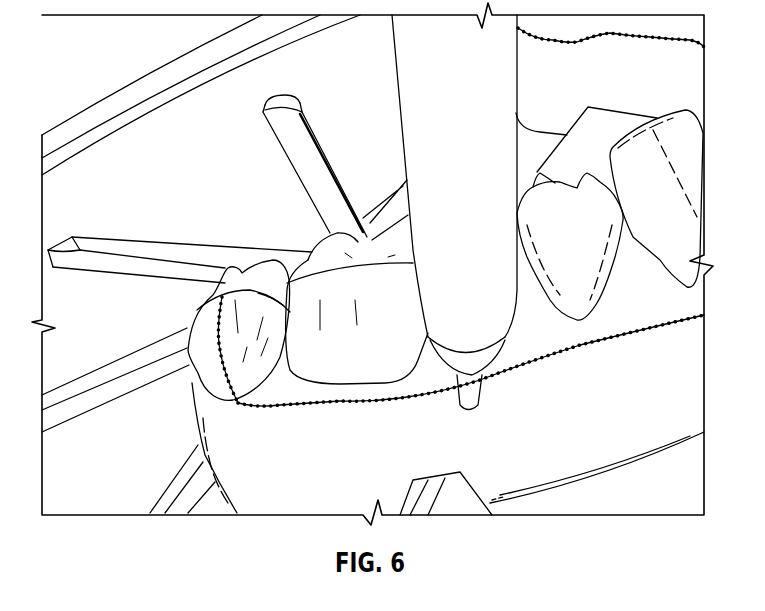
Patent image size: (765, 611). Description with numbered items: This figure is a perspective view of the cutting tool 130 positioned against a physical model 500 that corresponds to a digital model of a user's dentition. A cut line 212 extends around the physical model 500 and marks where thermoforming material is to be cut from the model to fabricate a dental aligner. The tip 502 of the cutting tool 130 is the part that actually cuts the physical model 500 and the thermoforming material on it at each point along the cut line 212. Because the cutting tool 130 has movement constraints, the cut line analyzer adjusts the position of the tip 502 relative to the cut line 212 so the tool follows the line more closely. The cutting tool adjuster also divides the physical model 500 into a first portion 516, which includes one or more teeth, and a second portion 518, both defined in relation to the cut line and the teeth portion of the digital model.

The cutting tool 130 is at (407, 96).
The cut line 212 is at (305, 408).
The physical model 500 is at (622, 445).
The tip 502 is at (332, 410).
The first portion 516 is at (620, 394).
The second portion 518 is at (656, 311).